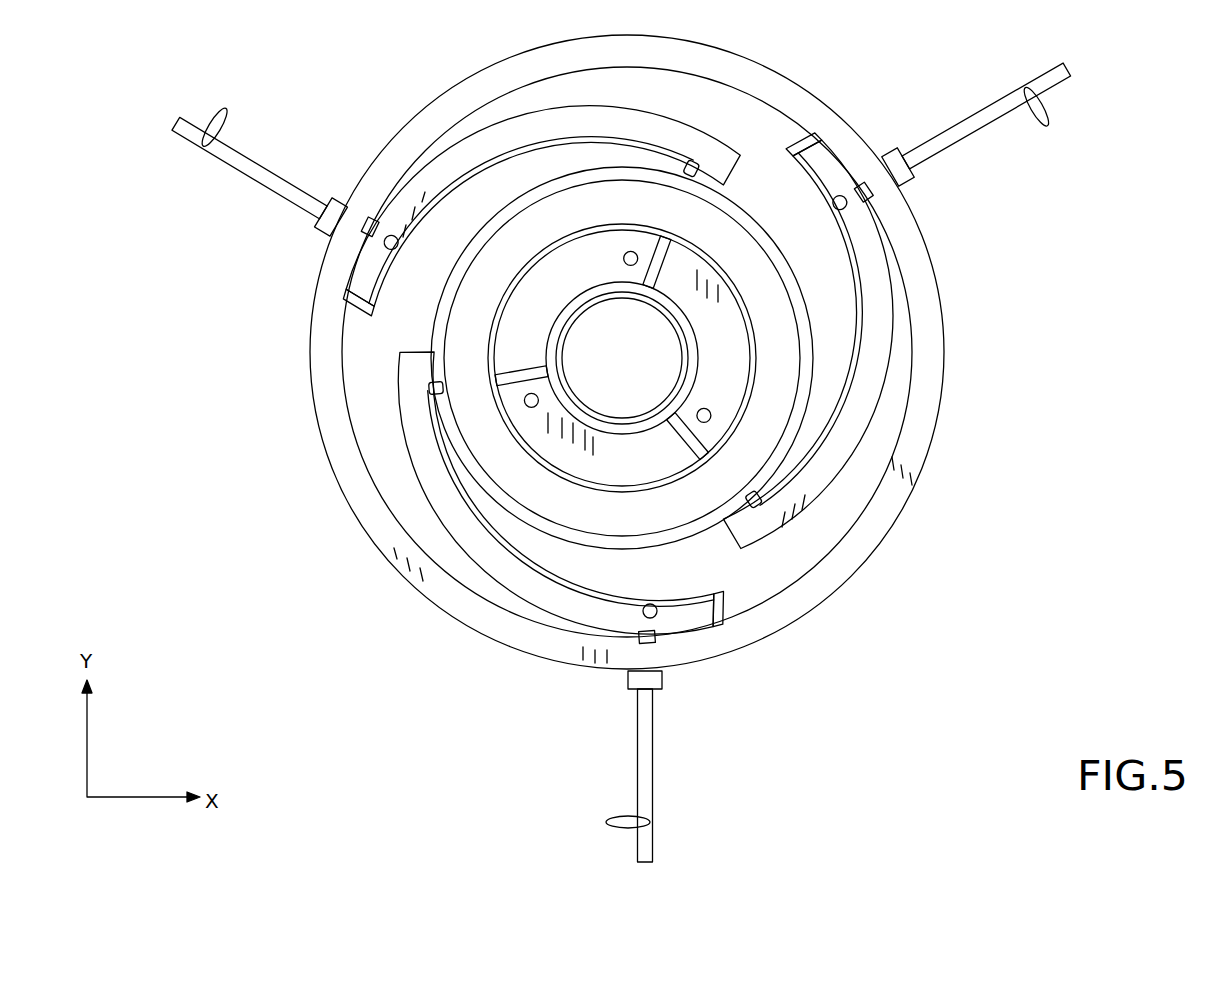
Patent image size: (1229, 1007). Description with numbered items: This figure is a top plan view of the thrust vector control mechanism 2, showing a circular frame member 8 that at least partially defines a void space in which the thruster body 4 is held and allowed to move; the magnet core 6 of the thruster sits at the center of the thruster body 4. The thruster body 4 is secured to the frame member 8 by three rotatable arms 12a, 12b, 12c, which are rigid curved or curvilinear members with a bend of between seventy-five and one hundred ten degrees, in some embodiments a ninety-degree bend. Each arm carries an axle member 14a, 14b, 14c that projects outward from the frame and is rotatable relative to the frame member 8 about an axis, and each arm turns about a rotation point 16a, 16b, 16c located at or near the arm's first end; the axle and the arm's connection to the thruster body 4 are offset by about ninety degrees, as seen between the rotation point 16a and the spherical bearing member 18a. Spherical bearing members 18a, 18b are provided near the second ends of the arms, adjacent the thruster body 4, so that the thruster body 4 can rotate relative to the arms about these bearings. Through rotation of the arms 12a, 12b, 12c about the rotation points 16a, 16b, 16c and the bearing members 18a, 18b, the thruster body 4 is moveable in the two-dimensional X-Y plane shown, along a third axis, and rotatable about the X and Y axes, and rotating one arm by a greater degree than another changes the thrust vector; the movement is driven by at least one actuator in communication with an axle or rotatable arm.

The thrust vector control mechanism 2 is at (840, 85).
The thruster body 4 is at (750, 270).
The magnet core 6 is at (611, 337).
The frame member 8 is at (441, 612).
The rotatable arm 12a is at (414, 462).
The rotatable arm 12b is at (874, 378).
The rotatable arm 12c is at (440, 167).
The axle member 14a is at (638, 776).
The axle member 14b is at (996, 136).
The axle member 14c is at (220, 164).
The rotation point 16a is at (652, 652).
The rotation point 16b is at (848, 190).
The rotation point 16c is at (347, 233).
The spherical bearing member 18a is at (422, 392).
The spherical bearing member 18b is at (749, 514).